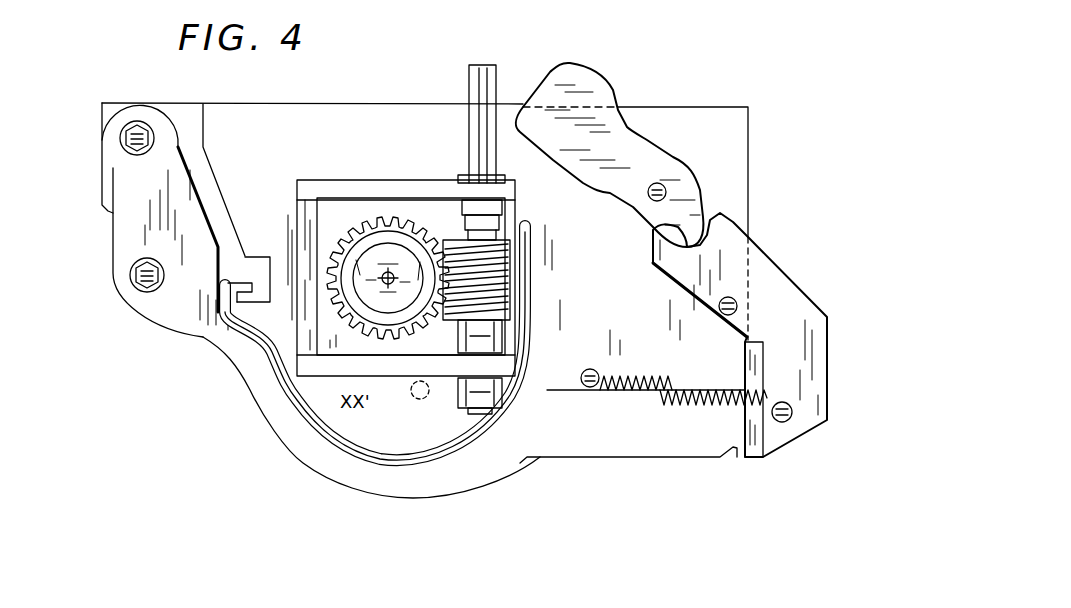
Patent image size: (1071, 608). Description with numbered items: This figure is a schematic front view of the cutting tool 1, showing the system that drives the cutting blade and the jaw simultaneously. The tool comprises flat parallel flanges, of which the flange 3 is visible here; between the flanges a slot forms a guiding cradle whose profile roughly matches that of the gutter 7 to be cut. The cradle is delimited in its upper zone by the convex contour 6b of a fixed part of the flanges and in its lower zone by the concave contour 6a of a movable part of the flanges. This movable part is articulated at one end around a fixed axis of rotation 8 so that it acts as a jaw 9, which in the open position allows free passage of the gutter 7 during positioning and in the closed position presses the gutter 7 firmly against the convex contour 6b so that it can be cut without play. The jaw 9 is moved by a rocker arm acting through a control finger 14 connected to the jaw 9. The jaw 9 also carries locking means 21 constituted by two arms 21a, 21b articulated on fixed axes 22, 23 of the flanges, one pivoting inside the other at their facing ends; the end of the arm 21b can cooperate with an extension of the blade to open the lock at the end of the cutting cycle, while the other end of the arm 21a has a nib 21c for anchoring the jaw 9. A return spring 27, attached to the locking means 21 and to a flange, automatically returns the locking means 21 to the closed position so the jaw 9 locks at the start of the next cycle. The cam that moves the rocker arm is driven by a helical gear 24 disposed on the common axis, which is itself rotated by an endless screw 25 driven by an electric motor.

The cutting tool 1 is at (698, 95).
The flange 3 is at (258, 171).
The concave contour 6a is at (345, 450).
The convex contour 6b is at (405, 470).
The gutter 7 is at (380, 460).
The fixed axis of rotation 8 is at (120, 138).
The jaw 9 is at (483, 468).
The control finger 14 is at (140, 285).
The locking means 21 is at (757, 235).
The arm 21a is at (828, 385).
The arm 21b is at (633, 43).
The nib 21c is at (760, 460).
The fixed axis 22 is at (738, 300).
The fixed axis 23 is at (665, 189).
The helical gear 24 is at (383, 222).
The endless screw 25 is at (508, 246).
The return spring 27 is at (668, 396).